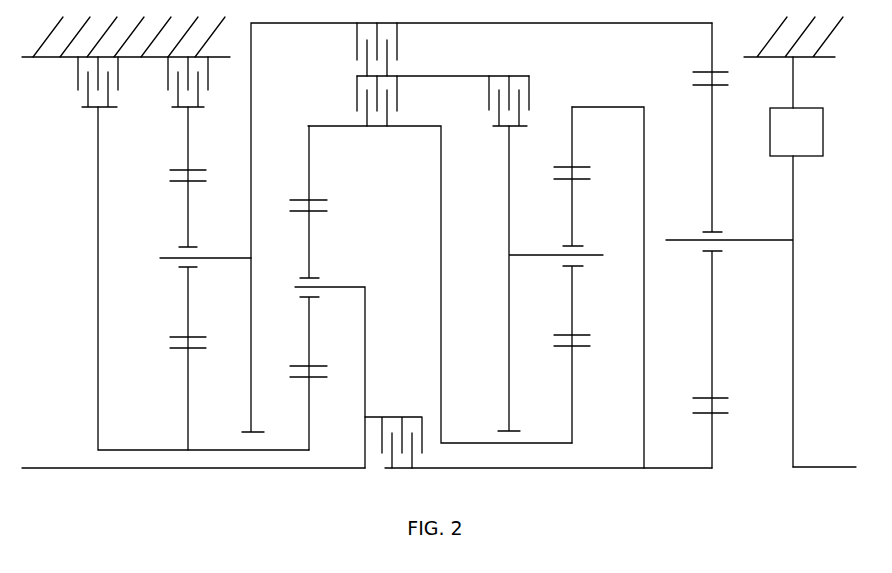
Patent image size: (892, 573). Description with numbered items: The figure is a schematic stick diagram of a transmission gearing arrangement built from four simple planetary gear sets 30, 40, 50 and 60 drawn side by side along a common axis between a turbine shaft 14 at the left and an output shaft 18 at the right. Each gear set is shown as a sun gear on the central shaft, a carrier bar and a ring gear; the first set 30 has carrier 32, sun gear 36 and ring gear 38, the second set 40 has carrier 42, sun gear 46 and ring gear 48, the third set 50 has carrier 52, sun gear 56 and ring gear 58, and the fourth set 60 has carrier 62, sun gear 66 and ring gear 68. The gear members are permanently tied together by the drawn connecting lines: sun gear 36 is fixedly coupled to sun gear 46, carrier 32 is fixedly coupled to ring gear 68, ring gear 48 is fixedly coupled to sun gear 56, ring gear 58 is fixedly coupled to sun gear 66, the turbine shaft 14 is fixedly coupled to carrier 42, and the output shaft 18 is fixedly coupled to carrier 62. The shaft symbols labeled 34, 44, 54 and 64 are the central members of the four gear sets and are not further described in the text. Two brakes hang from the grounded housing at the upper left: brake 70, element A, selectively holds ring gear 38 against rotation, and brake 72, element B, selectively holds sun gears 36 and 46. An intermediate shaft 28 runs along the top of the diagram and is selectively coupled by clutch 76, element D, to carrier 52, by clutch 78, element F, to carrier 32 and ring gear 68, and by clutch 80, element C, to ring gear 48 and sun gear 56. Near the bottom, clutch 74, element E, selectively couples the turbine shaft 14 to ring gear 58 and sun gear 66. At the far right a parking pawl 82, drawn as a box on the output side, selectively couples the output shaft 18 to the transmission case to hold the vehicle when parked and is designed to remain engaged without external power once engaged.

The turbine shaft 14 is at (98, 470).
The output shaft 18 is at (833, 468).
The intermediate shaft 28 is at (465, 77).
The planetary gear set 30 is at (203, 307).
The carrier 32 is at (251, 142).
The sun gear shaft of first gear set 34 is at (189, 222).
The sun gear 36 is at (188, 375).
The ring gear 38 is at (188, 143).
The planetary gear set 40 is at (432, 318).
The carrier 42 is at (365, 347).
The sun gear shaft of second gear set 44 is at (311, 252).
The sun gear 46 is at (310, 405).
The ring gear 48 is at (309, 173).
The planetary gear set 50 is at (604, 308).
The carrier 52 is at (509, 232).
The sun gear shaft of third gear set 54 is at (573, 220).
The sun gear 56 is at (573, 373).
The ring gear 58 is at (572, 143).
The planetary gear set 60 is at (555, 489).
The carrier 62 is at (793, 268).
The shaft of fourth gear set 64 is at (713, 197).
The sun gear 66 is at (713, 443).
The ring gear 68 is at (712, 55).
The brake 70 is at (168, 72).
The brake 72 is at (78, 72).
The clutch 74 is at (408, 413).
The clutch 76 is at (498, 75).
The clutch 78 is at (357, 57).
The clutch 80 is at (357, 90).
The parking pawl 82 is at (823, 140).